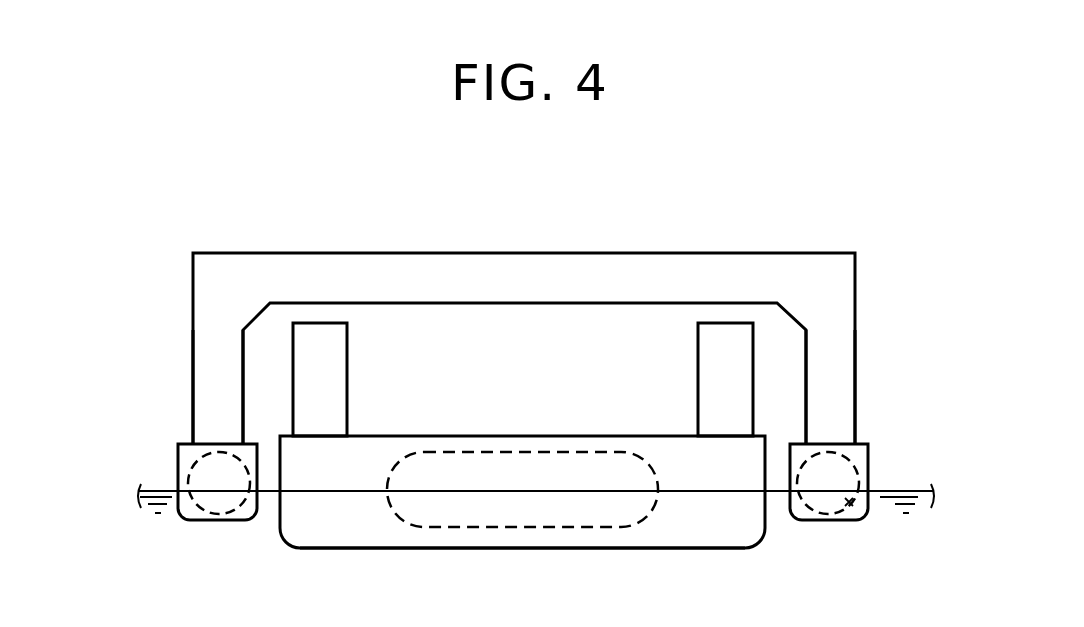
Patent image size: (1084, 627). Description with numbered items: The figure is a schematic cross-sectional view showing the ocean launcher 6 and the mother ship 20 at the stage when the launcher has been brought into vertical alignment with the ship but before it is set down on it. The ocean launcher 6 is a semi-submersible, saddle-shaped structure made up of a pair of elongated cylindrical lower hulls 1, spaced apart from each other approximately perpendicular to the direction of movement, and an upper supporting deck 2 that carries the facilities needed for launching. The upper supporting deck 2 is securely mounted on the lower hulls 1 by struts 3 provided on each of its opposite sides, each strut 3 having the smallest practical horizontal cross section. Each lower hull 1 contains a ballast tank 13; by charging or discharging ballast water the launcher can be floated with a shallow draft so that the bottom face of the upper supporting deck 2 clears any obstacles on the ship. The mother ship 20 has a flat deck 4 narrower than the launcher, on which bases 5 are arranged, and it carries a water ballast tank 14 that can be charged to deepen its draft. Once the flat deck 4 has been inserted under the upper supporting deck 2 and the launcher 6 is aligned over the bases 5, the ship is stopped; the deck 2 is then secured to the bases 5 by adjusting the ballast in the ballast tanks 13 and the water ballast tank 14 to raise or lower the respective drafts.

The lower hull 1 is at (215, 503).
The upper supporting deck 2 is at (608, 270).
The strut 3 is at (216, 385).
The flat deck 4 is at (526, 437).
The base 5 is at (330, 386).
The ocean launcher 6 is at (548, 228).
The ballast tank 13 is at (192, 523).
The water ballast tank 14 is at (608, 527).
The mother ship 20 is at (740, 548).